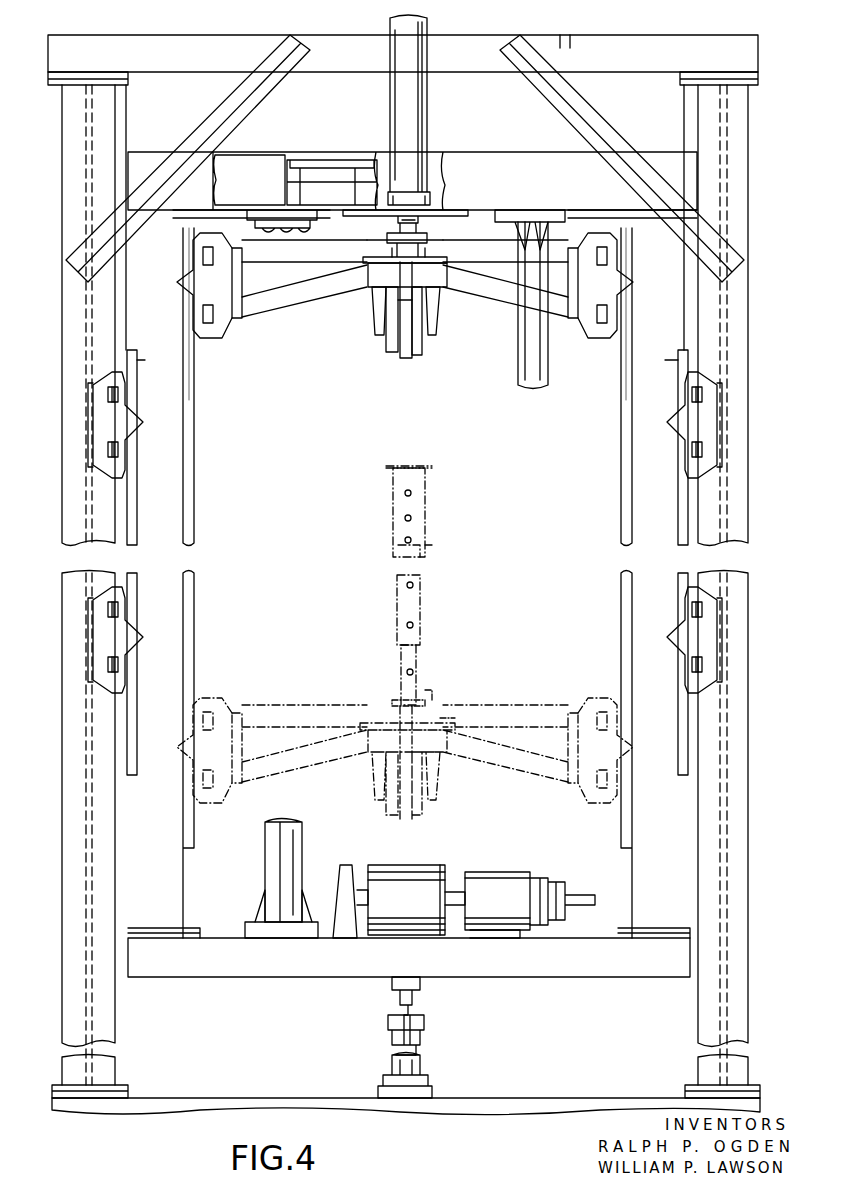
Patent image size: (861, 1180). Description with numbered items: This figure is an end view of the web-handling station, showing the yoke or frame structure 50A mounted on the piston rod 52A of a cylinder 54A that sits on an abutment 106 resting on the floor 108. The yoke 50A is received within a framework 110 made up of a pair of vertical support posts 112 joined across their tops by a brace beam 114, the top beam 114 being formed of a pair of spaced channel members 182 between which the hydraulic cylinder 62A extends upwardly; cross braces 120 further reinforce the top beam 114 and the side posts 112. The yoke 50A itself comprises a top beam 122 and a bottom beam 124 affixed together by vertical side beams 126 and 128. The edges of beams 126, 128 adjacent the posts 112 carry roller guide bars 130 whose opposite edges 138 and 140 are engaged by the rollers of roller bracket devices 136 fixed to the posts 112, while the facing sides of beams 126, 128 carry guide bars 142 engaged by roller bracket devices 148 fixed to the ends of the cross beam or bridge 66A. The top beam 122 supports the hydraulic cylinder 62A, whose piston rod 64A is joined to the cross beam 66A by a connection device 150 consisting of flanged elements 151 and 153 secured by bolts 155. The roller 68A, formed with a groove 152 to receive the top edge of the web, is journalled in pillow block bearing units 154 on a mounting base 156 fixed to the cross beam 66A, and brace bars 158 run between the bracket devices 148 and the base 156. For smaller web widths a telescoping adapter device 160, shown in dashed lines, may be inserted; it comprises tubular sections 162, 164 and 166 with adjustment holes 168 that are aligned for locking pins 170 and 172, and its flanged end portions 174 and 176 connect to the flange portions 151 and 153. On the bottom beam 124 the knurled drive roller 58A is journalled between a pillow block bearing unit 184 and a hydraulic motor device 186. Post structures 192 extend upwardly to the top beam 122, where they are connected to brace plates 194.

The yoke or frame structure 50A is at (155, 733).
The piston rod 52A is at (420, 994).
The cylinder 54A is at (426, 1050).
The knurled drive roller 58A is at (435, 865).
The hydraulic cylinder device 62A is at (430, 22).
The piston rod 64A is at (428, 238).
The cross beam or bridge structure 66A is at (496, 240).
The roller 68A is at (418, 362).
The abutment 106 is at (432, 1094).
The floor 108 is at (600, 1095).
The framework 110 is at (78, 968).
The support posts or beams 112 is at (72, 878).
The brace beam 114 is at (655, 50).
The cross braces 120 is at (200, 140).
The top beam 122 is at (490, 155).
The bottom beam 124 is at (608, 968).
The side beam 126 is at (183, 410).
The side beam 128 is at (630, 432).
The roller guide bars 130 is at (134, 352).
The roller bracket devices 136 is at (110, 410).
The edge of guide bar 138 is at (127, 352).
The edge of guide bar 140 is at (128, 388).
The roller guide bars 142 is at (183, 475).
The roller bracket devices 148 is at (215, 285).
The connection device 150 is at (375, 245).
The flanged element 151 is at (398, 229).
The groove 152 is at (362, 268).
The flanged element 153 is at (395, 322).
The pillow block bearing units 154 is at (375, 305).
The bolts 155 is at (438, 242).
The mounting base 156 is at (440, 285).
The brace bars 158 is at (278, 300).
The telescoping adapter device 160 is at (436, 545).
The tubular section 162 is at (393, 540).
The tubular section 164 is at (397, 615).
The tubular section 166 is at (401, 658).
The adjustment holes 168 is at (425, 495).
The locking pin 170 is at (418, 524).
The locking pin 172 is at (420, 625).
The flanged end portion 174 is at (428, 468).
The flanged end portion 176 is at (436, 700).
The channel members 182 is at (568, 48).
The pillow block bearing unit 184 is at (345, 870).
The hydraulic motor device 186 is at (530, 868).
The post structures 192 is at (520, 385).
The brace plates 194 is at (262, 212).